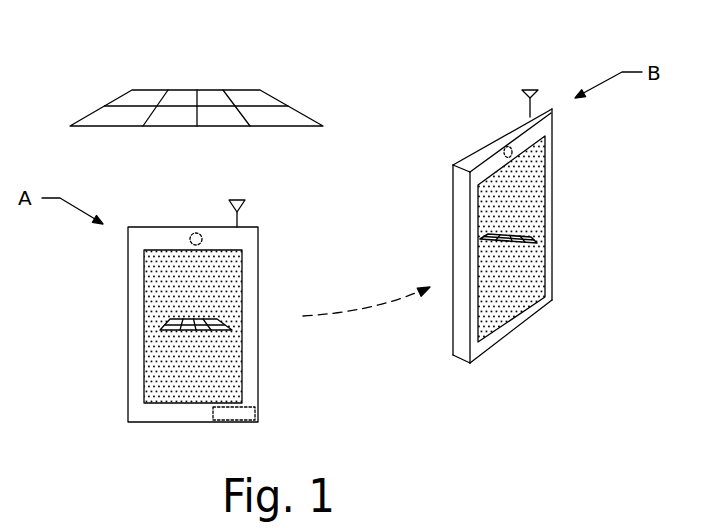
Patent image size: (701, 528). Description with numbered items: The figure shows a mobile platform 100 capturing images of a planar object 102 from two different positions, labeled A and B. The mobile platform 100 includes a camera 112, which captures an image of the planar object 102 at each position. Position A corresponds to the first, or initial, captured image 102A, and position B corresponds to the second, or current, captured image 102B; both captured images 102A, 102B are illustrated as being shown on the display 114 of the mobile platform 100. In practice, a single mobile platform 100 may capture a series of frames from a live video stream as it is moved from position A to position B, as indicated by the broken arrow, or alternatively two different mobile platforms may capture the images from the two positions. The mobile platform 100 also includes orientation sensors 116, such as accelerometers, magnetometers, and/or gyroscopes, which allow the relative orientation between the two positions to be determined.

The mobile platform 100 is at (128, 407).
The planar object 102 is at (270, 92).
The first captured image 102A is at (163, 328).
The second captured image 102B is at (537, 242).
The camera 112 is at (202, 239).
The display 114 is at (242, 389).
The orientation sensors 116 is at (255, 417).